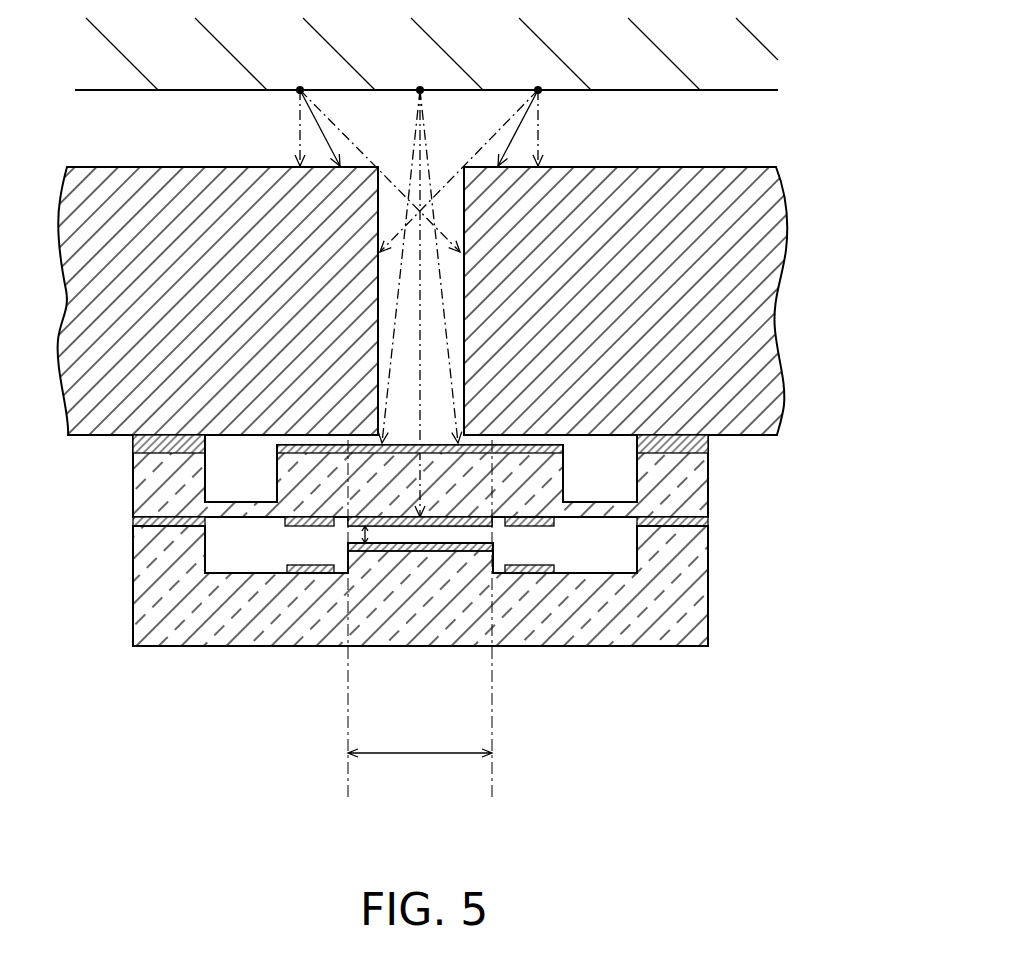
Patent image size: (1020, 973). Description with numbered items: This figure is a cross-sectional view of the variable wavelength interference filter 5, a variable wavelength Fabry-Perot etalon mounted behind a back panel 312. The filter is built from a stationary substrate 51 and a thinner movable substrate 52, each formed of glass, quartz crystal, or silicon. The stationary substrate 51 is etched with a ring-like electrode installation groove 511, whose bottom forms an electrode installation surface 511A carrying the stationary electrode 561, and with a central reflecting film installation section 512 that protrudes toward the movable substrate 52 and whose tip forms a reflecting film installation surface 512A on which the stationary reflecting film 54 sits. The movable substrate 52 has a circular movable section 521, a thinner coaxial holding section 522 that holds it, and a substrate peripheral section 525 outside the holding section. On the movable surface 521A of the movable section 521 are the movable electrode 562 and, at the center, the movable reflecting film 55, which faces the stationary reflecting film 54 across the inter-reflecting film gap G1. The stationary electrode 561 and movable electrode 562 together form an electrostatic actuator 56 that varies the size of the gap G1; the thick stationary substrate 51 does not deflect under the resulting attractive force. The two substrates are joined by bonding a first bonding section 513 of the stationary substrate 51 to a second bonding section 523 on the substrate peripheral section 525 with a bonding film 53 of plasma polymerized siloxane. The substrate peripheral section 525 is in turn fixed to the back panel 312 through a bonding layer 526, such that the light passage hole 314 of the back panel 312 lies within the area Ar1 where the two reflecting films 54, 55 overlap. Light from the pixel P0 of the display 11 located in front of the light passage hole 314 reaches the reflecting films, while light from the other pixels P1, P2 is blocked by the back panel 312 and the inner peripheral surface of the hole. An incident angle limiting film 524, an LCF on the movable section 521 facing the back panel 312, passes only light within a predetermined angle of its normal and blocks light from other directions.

The variable wavelength interference filter 5 is at (722, 634).
The display 11 is at (640, 93).
The back panel 312 is at (757, 300).
The light passage hole 314 is at (385, 298).
The stationary substrate 51 is at (712, 575).
The electrode installation groove 511 is at (206, 528).
The electrode installation surface 511A is at (287, 569).
The reflecting film installation section 512 is at (346, 560).
The reflecting film installation surface 512A is at (383, 546).
The first bonding section 513 is at (157, 521).
The movable substrate 52 is at (712, 490).
The movable section 521 is at (556, 481).
The movable surface 521A is at (283, 518).
The holding section 522 is at (243, 500).
The second bonding section 523 is at (133, 519).
The incident angle limiting film 524 is at (563, 449).
The substrate peripheral section 525 is at (133, 463).
The bonding layer 526 is at (712, 440).
The bonding film 53 is at (712, 522).
The stationary reflecting film 54 is at (432, 551).
The movable reflecting film 55 is at (476, 526).
The electrostatic actuator 56 is at (597, 524).
The stationary electrode 561 is at (530, 568).
The movable electrode 562 is at (530, 526).
The inter-reflecting film gap G1 is at (362, 535).
The area Ar1 is at (420, 620).
The pixel P0 is at (420, 92).
The pixel P1 is at (300, 92).
The pixel P2 is at (538, 92).